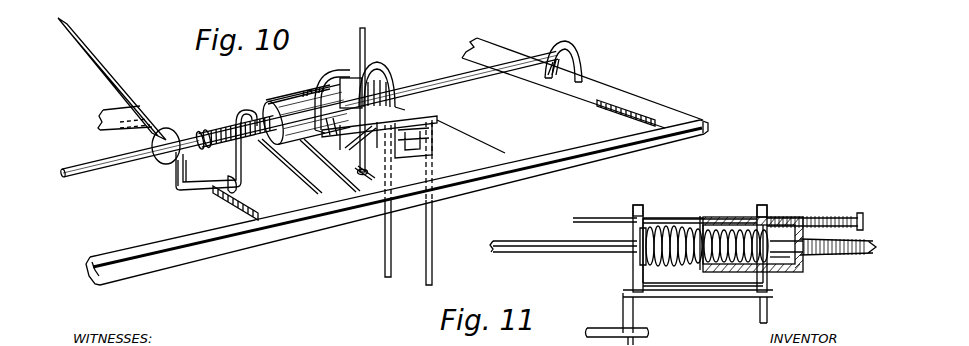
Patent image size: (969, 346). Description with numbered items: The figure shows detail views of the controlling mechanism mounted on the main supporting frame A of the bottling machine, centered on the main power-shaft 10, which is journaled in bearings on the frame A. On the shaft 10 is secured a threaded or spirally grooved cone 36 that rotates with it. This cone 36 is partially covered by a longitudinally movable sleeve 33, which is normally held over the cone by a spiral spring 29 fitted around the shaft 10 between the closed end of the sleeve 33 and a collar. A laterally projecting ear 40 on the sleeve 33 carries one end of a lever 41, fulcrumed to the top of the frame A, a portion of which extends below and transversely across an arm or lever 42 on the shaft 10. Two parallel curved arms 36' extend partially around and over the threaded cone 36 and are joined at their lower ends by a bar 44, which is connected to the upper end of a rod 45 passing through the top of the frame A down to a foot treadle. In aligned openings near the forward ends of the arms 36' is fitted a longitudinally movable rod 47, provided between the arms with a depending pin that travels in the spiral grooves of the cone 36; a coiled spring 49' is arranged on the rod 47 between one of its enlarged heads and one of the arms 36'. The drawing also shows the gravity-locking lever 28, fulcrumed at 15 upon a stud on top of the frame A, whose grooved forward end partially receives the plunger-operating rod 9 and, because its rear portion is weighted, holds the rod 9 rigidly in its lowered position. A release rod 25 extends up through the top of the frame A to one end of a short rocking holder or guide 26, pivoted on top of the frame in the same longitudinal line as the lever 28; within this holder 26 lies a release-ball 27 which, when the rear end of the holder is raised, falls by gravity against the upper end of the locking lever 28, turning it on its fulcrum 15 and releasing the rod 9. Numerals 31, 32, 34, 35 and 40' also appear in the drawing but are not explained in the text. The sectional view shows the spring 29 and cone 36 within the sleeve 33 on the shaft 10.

In FIG. 10, the frame A is at (397, 161).
In FIG. 10, the plunger-operating rod 9 is at (370, 101).
In FIG. 10, the main power-shaft 10 is at (309, 114).
In FIG. 11, the main power-shaft 10 is at (688, 240).
In FIG. 10, the fulcrum 15 is at (365, 175).
In FIG. 10, the rod 25 is at (425, 203).
In FIG. 10, the rocking holder 26 is at (392, 121).
In FIG. 10, the release-ball 27 is at (400, 132).
In FIG. 10, the gravity-locking lever 28 is at (359, 135).
In FIG. 10, the spiral spring 29 is at (236, 130).
In FIG. 11, the spiral spring 29 is at (838, 257).
In FIG. 11, the coil spring 31 is at (656, 232).
In FIG. 11, the collar 32 is at (638, 256).
In FIG. 10, the sleeve 33 is at (304, 115).
In FIG. 11, the sleeve 33 is at (691, 311).
In FIG. 11, the casing 34 is at (712, 224).
In FIG. 11, the partition 35 is at (699, 236).
In FIG. 10, the threaded cone 36 is at (393, 83).
In FIG. 11, the threaded cone 36 is at (720, 242).
In FIG. 10, the curved arms 36' is at (366, 89).
In FIG. 11, the curved arms 36' is at (703, 242).
In FIG. 10, the ear 40 is at (248, 109).
In FIG. 10, the latch rod 40' is at (305, 85).
In FIG. 10, the lever 41 is at (211, 148).
In FIG. 10, the arm 42 is at (112, 79).
In FIG. 10, the bar 44 is at (355, 126).
In FIG. 11, the bar 44 is at (703, 252).
In FIG. 10, the rod 45 is at (351, 89).
In FIG. 10, the longitudinally-movable rod 47 is at (268, 100).
In FIG. 11, the longitudinally-movable rod 47 is at (866, 210).
In FIG. 11, the coiled spring 49' is at (815, 214).